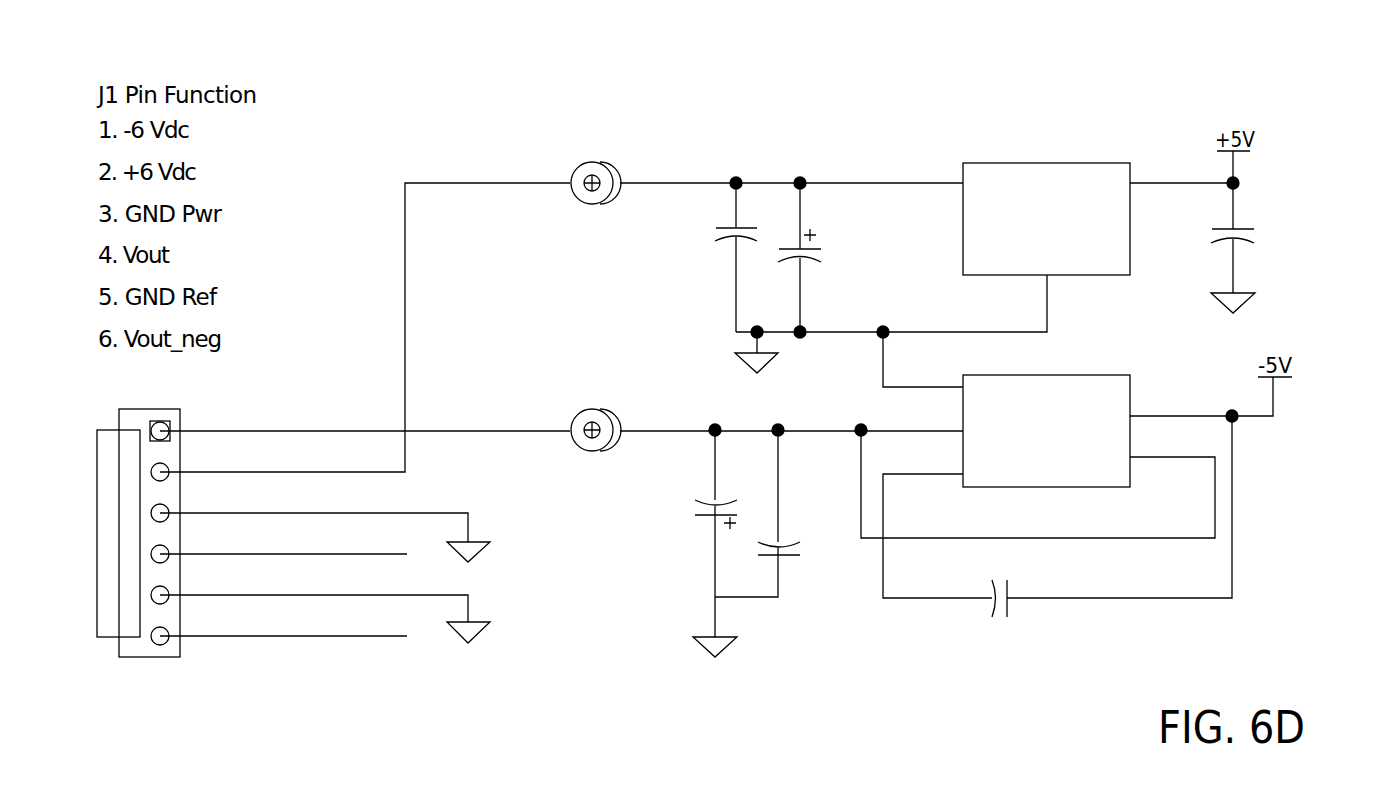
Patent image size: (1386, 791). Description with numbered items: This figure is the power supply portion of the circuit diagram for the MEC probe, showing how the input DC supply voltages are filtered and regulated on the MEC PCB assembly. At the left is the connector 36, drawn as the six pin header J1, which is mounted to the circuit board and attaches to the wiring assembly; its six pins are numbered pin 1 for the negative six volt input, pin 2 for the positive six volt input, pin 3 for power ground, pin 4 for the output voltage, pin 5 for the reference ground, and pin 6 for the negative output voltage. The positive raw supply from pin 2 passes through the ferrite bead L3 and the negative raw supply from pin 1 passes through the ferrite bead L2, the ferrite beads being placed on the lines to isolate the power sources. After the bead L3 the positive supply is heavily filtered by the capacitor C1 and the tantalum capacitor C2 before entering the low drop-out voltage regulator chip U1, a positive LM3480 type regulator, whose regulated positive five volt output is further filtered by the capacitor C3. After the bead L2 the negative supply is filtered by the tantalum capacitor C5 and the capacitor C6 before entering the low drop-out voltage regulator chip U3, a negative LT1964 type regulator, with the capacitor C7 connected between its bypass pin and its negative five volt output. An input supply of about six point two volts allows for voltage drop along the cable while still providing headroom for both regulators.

The connector 36 is at (260, 560).
The u-MOLEX 6-pin header connector J1 is at (154, 511).
The J1 pin 1, -6 Vdc (VN_raw) 1 is at (561, 416).
The J1 pin 2, +6 Vdc (VP_raw) 2 is at (365, 327).
The J1 pin 3, GND Pwr 3 is at (325, 523).
The J1 pin 4, Vout 4 is at (283, 539).
The J1 pin 5, GND Ref 5 is at (325, 605).
The J1 pin 6, Vout_neg 6 is at (283, 621).
The ferrite bead 100MA 600 OHM L3 is at (598, 143).
The ferrite bead 100MA 600 OHM L2 is at (598, 393).
The capacitor 0.1uF 16V X7R C1 is at (686, 257).
The tantalum capacitor 10uF 16V C2 is at (859, 257).
The capacitor 0.1uF 16V X7R C3 is at (1285, 248).
The tantalum capacitor 10uF 16V C5 is at (659, 543).
The capacitor 0.1uF 16V X7R C6 is at (803, 542).
The capacitor 1000pF 50V NPO C7 is at (1072, 637).
The low drop-out voltage regulator chip U1 is at (1047, 213).
The low drop-out voltage regulator chip U3 is at (1047, 431).